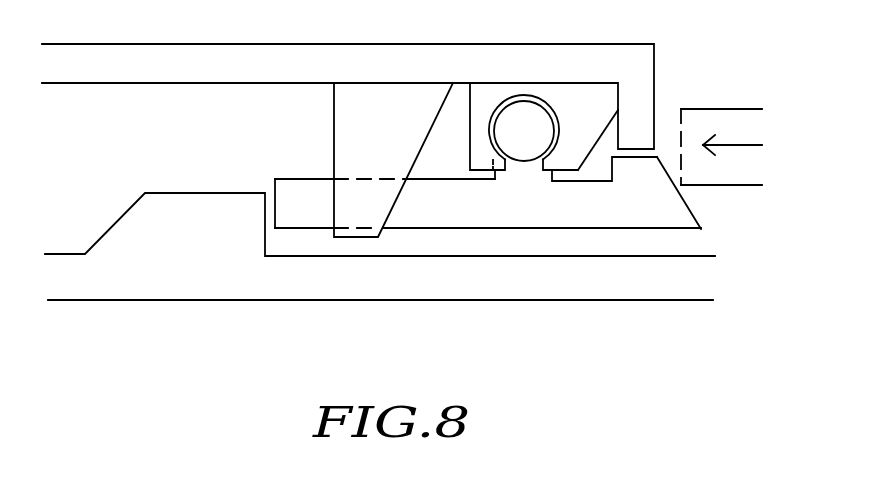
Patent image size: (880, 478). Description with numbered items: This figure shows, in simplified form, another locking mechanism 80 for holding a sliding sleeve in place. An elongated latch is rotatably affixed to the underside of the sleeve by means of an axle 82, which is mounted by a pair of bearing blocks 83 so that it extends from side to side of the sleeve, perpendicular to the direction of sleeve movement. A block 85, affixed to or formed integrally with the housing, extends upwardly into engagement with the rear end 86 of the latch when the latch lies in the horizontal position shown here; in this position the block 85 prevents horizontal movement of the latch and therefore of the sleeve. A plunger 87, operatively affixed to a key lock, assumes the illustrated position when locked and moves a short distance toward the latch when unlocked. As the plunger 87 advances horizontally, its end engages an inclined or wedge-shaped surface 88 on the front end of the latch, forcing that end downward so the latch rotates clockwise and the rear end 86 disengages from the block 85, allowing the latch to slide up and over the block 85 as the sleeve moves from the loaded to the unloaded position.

The locking mechanism 80 is at (605, 301).
The axle 82 is at (536, 118).
The bearing blocks 83 is at (590, 138).
The block 85 is at (196, 212).
The rear end 86 is at (276, 178).
The plunger 87 is at (700, 109).
The inclined or wedge-shaped surface 88 is at (692, 212).